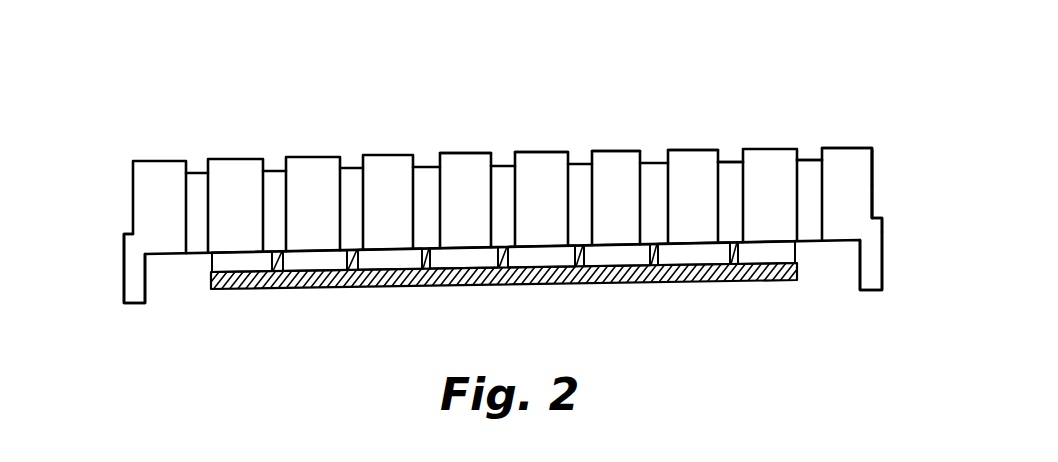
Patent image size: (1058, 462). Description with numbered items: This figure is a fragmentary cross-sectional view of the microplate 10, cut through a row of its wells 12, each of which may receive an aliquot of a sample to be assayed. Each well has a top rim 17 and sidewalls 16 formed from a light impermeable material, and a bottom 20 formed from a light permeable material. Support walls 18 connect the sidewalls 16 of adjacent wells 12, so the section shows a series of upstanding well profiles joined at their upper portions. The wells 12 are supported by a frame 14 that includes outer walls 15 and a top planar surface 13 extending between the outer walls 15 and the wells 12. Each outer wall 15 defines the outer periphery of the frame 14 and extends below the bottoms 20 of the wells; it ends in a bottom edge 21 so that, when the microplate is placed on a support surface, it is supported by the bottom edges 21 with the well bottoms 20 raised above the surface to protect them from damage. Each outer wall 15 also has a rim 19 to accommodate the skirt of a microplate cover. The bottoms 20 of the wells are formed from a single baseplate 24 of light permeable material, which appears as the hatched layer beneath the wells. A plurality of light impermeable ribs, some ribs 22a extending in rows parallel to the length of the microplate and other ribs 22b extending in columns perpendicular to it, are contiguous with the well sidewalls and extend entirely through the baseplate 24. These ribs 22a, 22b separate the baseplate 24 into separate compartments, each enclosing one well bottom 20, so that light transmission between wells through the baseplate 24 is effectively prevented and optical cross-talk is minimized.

The microplate 10 is at (168, 148).
The wells 12 is at (532, 158).
The top planar surface 13 is at (850, 148).
The frame 14 is at (876, 168).
The outer wall 15 is at (872, 197).
The sidewalls 16 is at (738, 168).
The top rim 17 is at (677, 150).
The support walls 18 is at (808, 167).
The rim 19 is at (882, 218).
The bottom 20 is at (447, 258).
The bottom edge 21 is at (124, 303).
The ribs 22a is at (728, 248).
The ribs 22b is at (547, 283).
The baseplate 24 is at (206, 268).